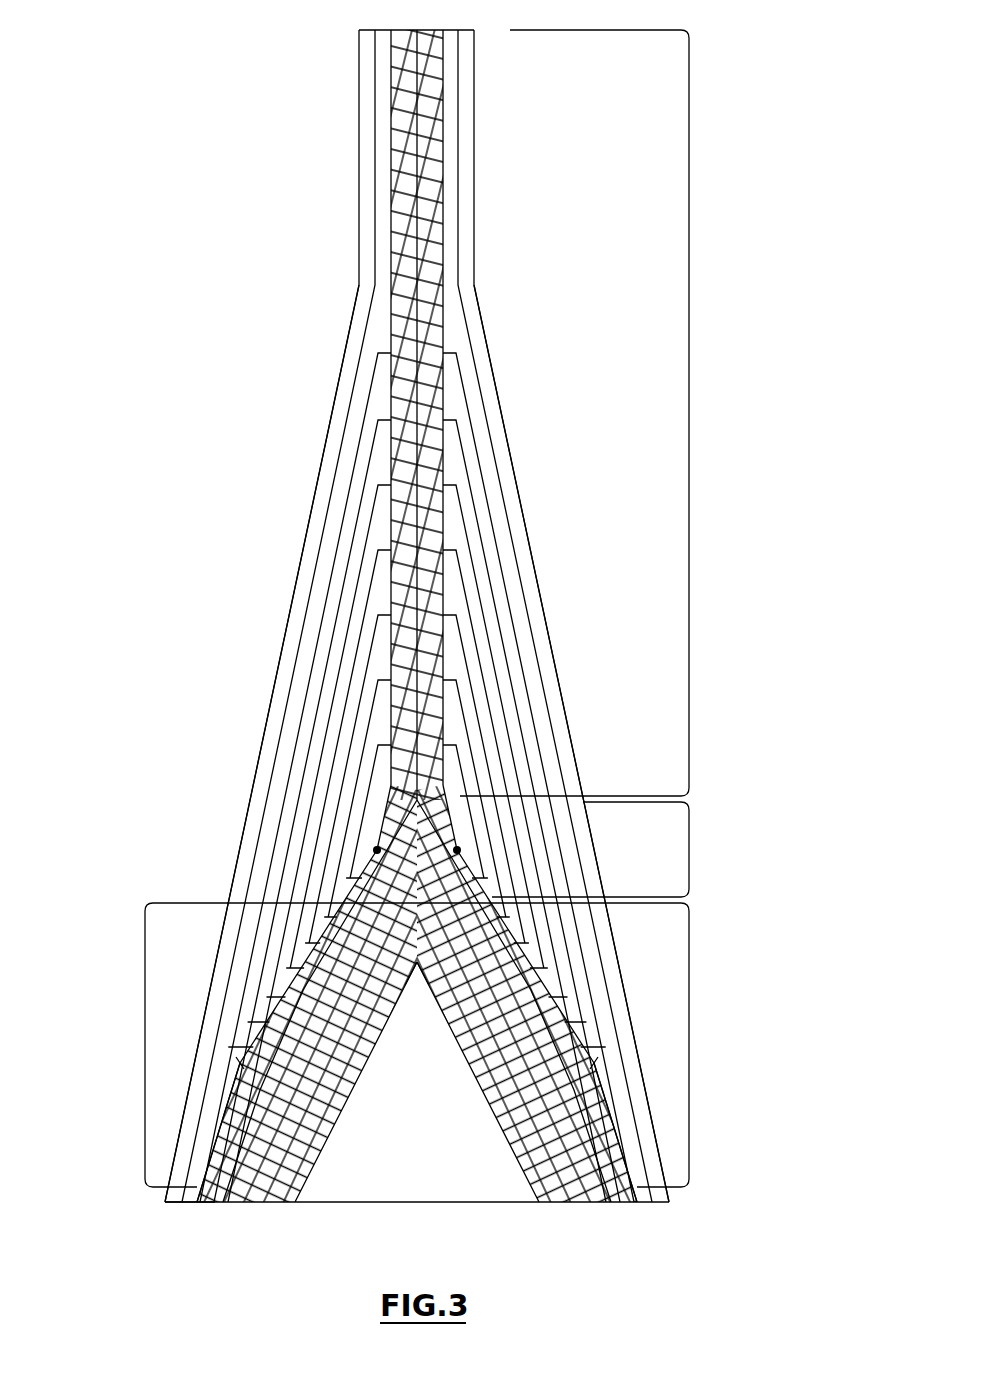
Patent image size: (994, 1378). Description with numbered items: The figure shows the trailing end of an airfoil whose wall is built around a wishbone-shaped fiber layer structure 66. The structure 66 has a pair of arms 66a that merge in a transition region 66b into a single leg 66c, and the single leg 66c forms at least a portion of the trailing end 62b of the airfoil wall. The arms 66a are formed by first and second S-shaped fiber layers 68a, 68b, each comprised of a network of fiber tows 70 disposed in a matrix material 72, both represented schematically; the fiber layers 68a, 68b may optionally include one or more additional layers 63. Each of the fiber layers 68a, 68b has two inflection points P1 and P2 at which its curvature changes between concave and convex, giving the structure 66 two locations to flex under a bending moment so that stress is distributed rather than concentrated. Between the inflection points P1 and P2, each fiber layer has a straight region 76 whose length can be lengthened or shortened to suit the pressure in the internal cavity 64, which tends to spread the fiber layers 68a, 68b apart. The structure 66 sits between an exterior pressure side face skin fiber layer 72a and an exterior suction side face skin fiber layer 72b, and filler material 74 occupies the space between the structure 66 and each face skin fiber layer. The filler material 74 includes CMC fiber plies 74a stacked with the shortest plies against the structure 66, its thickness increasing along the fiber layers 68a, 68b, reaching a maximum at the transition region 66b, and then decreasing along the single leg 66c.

The trailing end 62b is at (735, 665).
The additional layers 63 is at (209, 1203).
The internal cavity 64 is at (431, 1179).
The wishbone-shaped fiber layer structure 66 is at (350, 1057).
The arms 66a is at (145, 1032).
The transition region 66b is at (689, 847).
The single leg 66c is at (689, 412).
The first S-shaped fiber layer 68a is at (602, 1075).
The second S-shaped fiber layer 68b is at (232, 1075).
The fiber tows 70 is at (312, 1137).
The matrix material 72 is at (285, 1092).
The exterior pressure side face skin fiber layer 72a is at (568, 732).
The exterior suction side face skin fiber layer 72b is at (253, 786).
The filler material 74 is at (340, 678).
The CMC fiber plies 74a is at (330, 725).
The straight region 76 is at (455, 1013).
The first inflection point P1 is at (240, 1063).
The second inflection point P2 is at (377, 850).